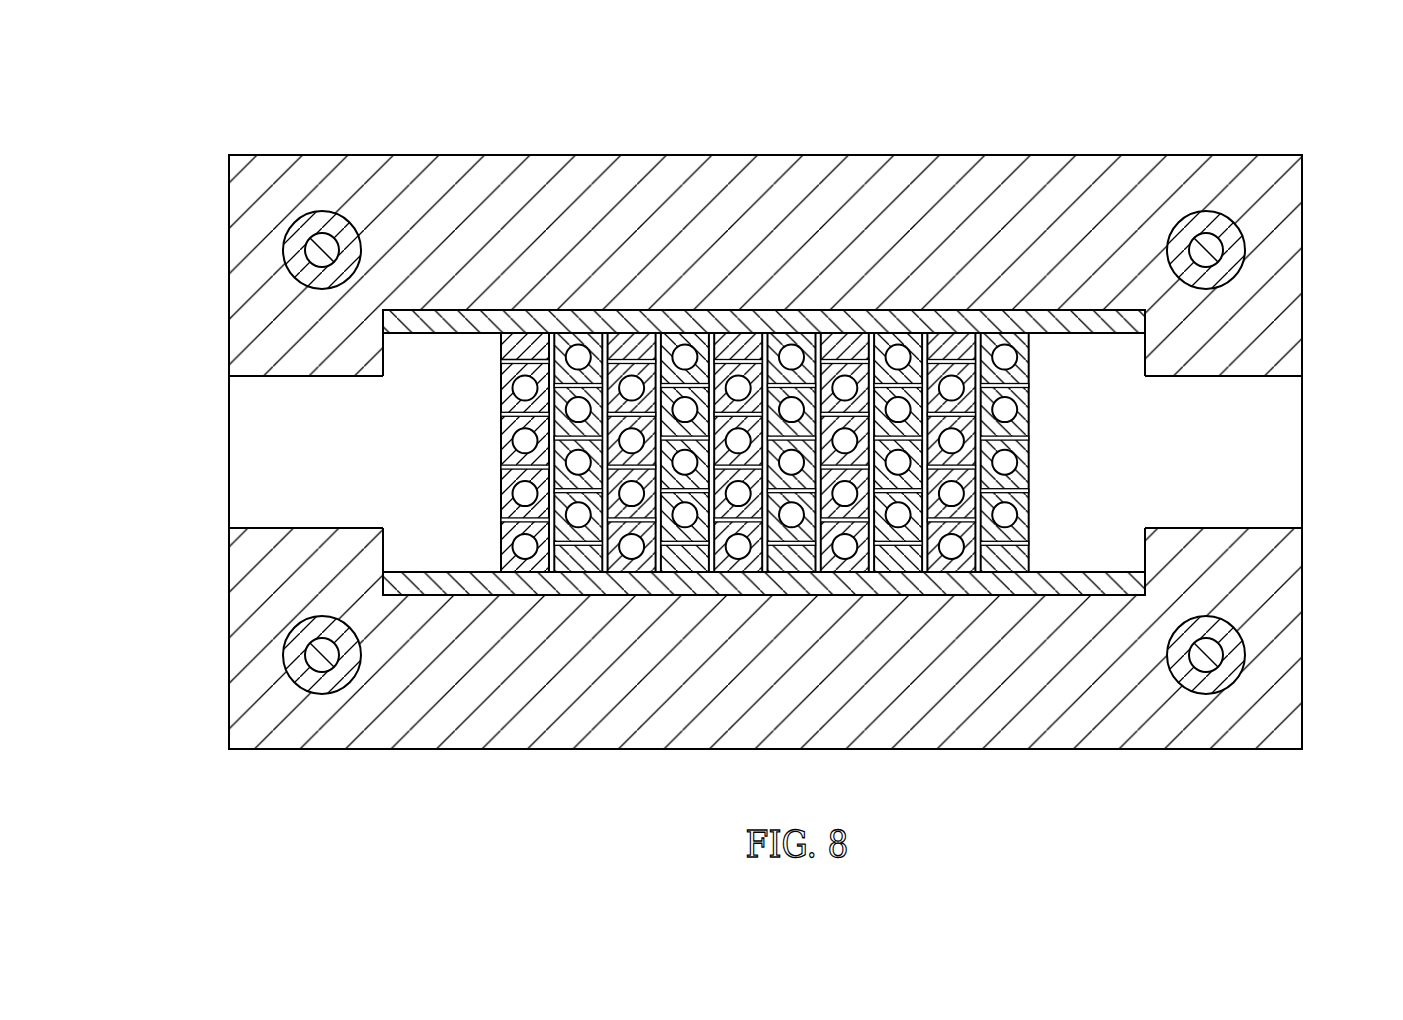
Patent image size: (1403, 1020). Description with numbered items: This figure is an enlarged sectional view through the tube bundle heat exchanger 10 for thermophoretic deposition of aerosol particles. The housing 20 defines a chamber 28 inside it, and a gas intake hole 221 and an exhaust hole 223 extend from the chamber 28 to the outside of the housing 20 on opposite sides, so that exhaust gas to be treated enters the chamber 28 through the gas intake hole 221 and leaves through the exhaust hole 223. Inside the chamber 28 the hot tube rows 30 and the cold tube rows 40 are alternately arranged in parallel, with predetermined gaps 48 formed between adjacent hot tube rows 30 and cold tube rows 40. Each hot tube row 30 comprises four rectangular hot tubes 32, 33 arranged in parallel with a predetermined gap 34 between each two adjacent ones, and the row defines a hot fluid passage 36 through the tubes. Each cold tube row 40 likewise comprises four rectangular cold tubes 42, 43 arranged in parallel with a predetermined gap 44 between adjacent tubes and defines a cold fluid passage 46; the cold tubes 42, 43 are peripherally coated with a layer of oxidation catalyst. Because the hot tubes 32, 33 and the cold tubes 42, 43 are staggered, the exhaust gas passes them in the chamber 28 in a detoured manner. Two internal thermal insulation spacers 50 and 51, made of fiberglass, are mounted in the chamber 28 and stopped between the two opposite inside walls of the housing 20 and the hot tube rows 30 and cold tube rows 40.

The tube bundle heat exchanger 10 is at (216, 130).
The housing 20 is at (462, 146).
The gas intake hole 221 is at (258, 433).
The exhaust hole 223 is at (1280, 441).
The chamber 28 is at (1075, 358).
The hot tube row 30 is at (532, 580).
The hot tube 32 is at (727, 367).
The hot tube 33 is at (850, 563).
The gap 34 is at (955, 362).
The hot fluid passage 36 is at (522, 552).
The cold tube row 40 is at (592, 330).
The cold tube 42 is at (681, 350).
The cold tube 43 is at (681, 535).
The gap 44 is at (543, 358).
The cold fluid passage 46 is at (572, 352).
The gap 48 is at (977, 377).
The internal thermal insulation spacer 50 is at (413, 317).
The internal thermal insulation spacer 51 is at (1117, 588).